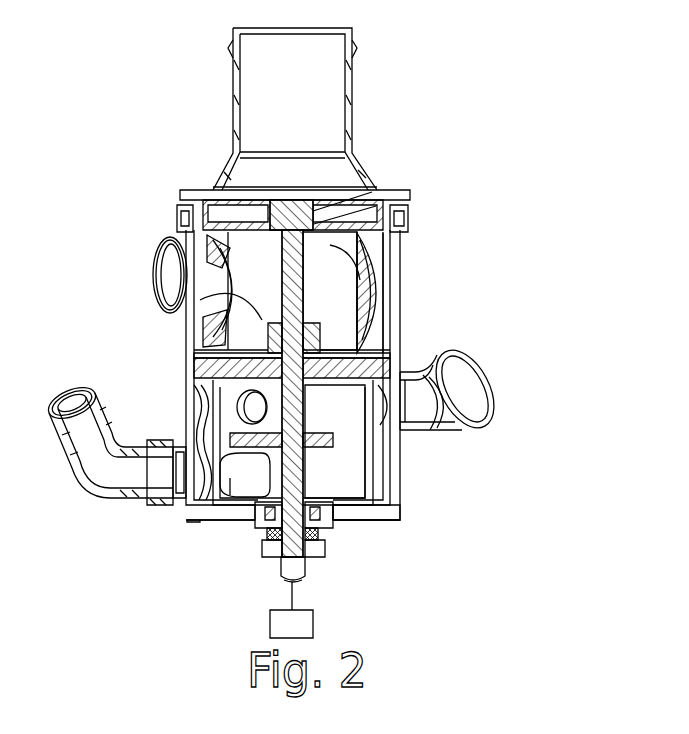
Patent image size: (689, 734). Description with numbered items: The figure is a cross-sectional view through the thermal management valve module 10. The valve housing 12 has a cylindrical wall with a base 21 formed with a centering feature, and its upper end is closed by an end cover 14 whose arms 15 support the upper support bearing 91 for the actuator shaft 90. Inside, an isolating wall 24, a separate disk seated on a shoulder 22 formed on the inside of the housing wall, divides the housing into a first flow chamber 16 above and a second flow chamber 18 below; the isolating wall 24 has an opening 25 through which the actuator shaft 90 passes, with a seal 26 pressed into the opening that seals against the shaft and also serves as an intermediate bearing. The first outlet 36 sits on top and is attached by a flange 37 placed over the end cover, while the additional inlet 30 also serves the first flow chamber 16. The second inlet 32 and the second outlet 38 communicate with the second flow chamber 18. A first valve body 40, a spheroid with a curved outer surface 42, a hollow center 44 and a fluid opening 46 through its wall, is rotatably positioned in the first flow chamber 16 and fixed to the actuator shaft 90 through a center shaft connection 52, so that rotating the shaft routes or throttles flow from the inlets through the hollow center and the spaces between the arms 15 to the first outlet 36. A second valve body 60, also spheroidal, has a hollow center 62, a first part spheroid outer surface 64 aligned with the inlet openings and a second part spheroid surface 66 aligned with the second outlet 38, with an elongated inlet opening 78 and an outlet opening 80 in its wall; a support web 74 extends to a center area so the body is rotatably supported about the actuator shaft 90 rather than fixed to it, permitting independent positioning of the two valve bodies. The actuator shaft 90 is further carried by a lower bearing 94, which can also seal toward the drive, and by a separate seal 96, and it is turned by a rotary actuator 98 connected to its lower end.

The thermal management valve module 10 is at (479, 166).
The valve housing 12 is at (177, 212).
The end cover 14 is at (408, 208).
The arms 15 is at (340, 203).
The first flow chamber 16 is at (385, 320).
The second flow chamber 18 is at (398, 460).
The base 21 is at (265, 540).
The shoulder 22 is at (402, 375).
The isolating wall 24 is at (195, 353).
The opening 25 is at (308, 390).
The seal 26 is at (195, 370).
The additional inlet 30 is at (153, 268).
The second inlet 32 is at (492, 360).
The first outlet 36 is at (353, 70).
The flange 37 is at (447, 352).
The second outlet 38 is at (116, 500).
The first valve body 40 is at (207, 250).
The outer surface 42 is at (372, 272).
The hollow center 44 is at (340, 240).
The fluid opening 46 is at (210, 312).
The center shaft connection 52 is at (282, 322).
The second valve body 60 is at (237, 402).
The hollow center 62 is at (382, 490).
The first part spheroid outer surface 64 is at (403, 433).
The second part spheroid surface 66 is at (400, 512).
The support web 74 is at (238, 480).
The elongated inlet opening 78 is at (203, 505).
The outlet opening 80 is at (194, 432).
The actuator shaft 90 is at (306, 580).
The upper support bearing 91 is at (312, 212).
The lower bearing 94 is at (322, 520).
The seal 96 is at (322, 540).
The rotary actuator 98 is at (291, 611).